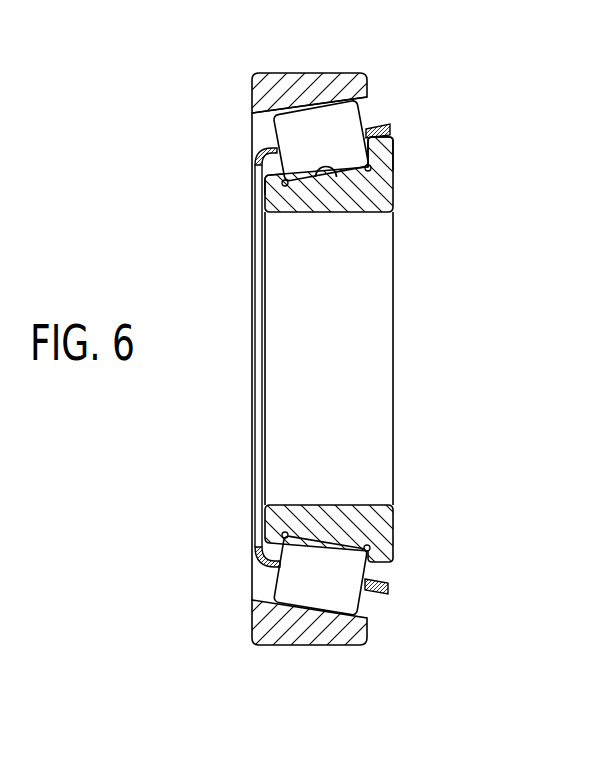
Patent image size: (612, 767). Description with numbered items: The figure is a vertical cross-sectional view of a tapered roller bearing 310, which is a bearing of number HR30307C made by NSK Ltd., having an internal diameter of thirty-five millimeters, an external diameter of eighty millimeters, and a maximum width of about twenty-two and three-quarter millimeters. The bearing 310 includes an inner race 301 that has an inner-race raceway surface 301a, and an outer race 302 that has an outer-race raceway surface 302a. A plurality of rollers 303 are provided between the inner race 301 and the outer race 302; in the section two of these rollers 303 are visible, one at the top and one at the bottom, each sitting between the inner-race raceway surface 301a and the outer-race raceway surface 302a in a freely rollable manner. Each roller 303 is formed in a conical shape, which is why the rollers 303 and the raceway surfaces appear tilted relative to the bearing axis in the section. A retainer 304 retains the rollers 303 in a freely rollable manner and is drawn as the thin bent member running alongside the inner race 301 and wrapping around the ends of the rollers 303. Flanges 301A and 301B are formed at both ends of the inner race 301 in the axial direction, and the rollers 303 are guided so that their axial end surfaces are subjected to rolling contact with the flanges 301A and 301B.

The tapered roller bearing 310 is at (452, 75).
The inner race 301 is at (370, 192).
The inner-race raceway surface 301a is at (313, 178).
The flange 301A is at (273, 178).
The flange 301B is at (388, 143).
The outer race 302 is at (293, 82).
The outer-race raceway surface 302a is at (275, 128).
The roller 303 is at (313, 142).
The retainer 304 is at (380, 120).